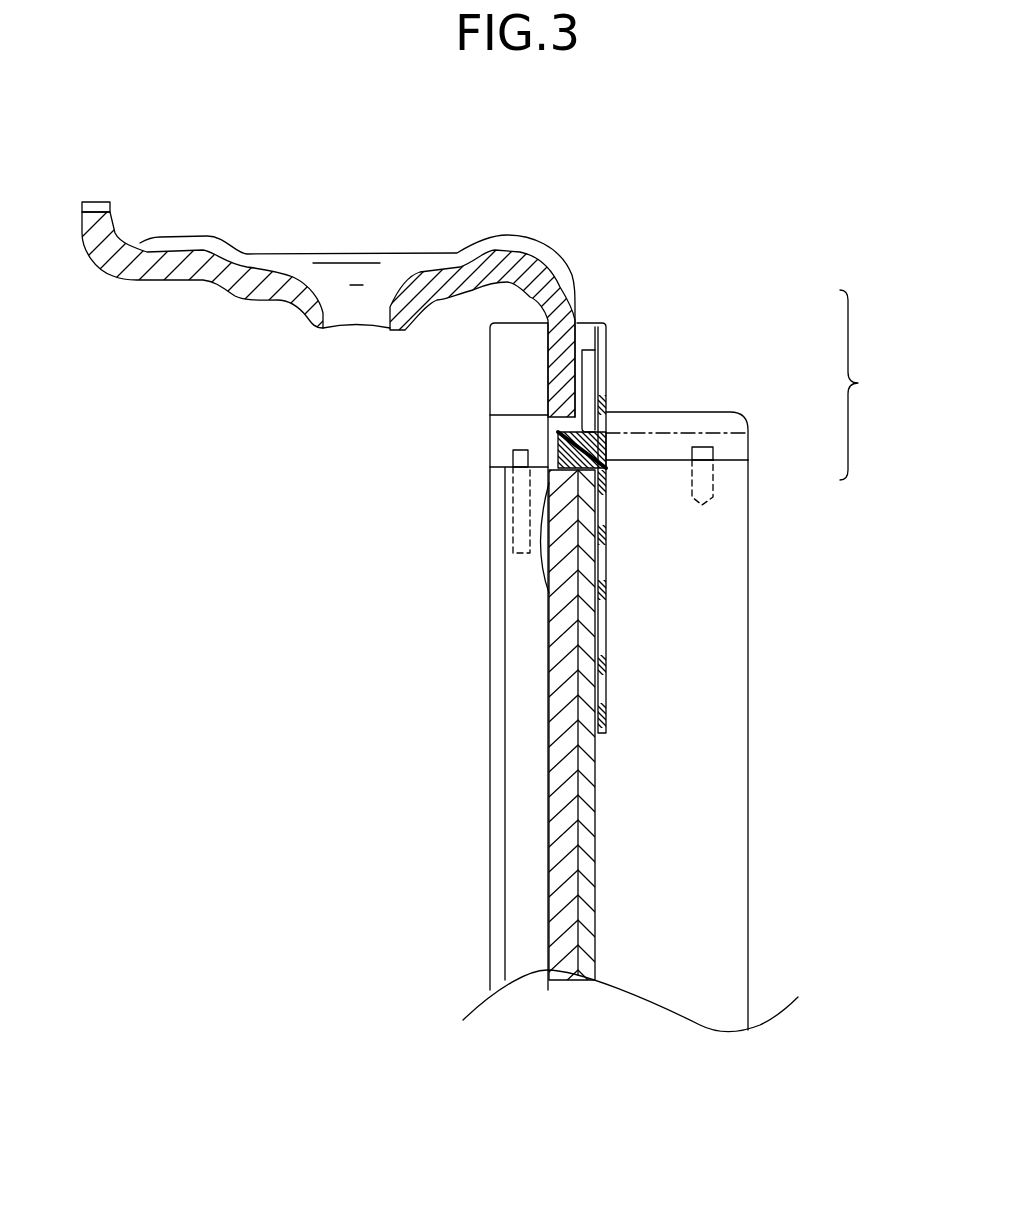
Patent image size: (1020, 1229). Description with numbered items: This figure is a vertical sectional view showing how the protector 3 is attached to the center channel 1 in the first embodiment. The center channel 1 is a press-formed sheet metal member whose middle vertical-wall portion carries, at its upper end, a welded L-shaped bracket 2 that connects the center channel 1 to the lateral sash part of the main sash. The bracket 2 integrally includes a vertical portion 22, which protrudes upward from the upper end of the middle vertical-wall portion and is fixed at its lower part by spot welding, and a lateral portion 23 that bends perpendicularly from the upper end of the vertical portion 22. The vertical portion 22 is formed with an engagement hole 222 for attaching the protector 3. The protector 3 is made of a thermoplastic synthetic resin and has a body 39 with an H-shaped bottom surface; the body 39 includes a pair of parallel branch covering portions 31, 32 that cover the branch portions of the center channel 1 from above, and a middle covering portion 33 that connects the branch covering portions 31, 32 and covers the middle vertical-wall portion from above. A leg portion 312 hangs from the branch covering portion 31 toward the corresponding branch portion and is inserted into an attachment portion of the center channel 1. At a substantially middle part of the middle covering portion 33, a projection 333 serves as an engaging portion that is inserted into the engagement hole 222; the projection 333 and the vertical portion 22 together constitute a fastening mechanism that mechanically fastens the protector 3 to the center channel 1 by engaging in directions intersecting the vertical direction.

The center channel 1 is at (762, 605).
The L-shaped bracket 2 is at (328, 284).
The vertical portion 22 is at (550, 627).
The engagement hole 222 is at (550, 480).
The lateral portion 23 is at (192, 272).
The protector 3 is at (630, 507).
The branch covering portion 31 is at (718, 425).
The leg portion 312 is at (513, 460).
The branch covering portion 32 is at (733, 447).
The middle covering portion 33 is at (602, 408).
The projection 333 is at (567, 450).
The body 39 is at (873, 385).